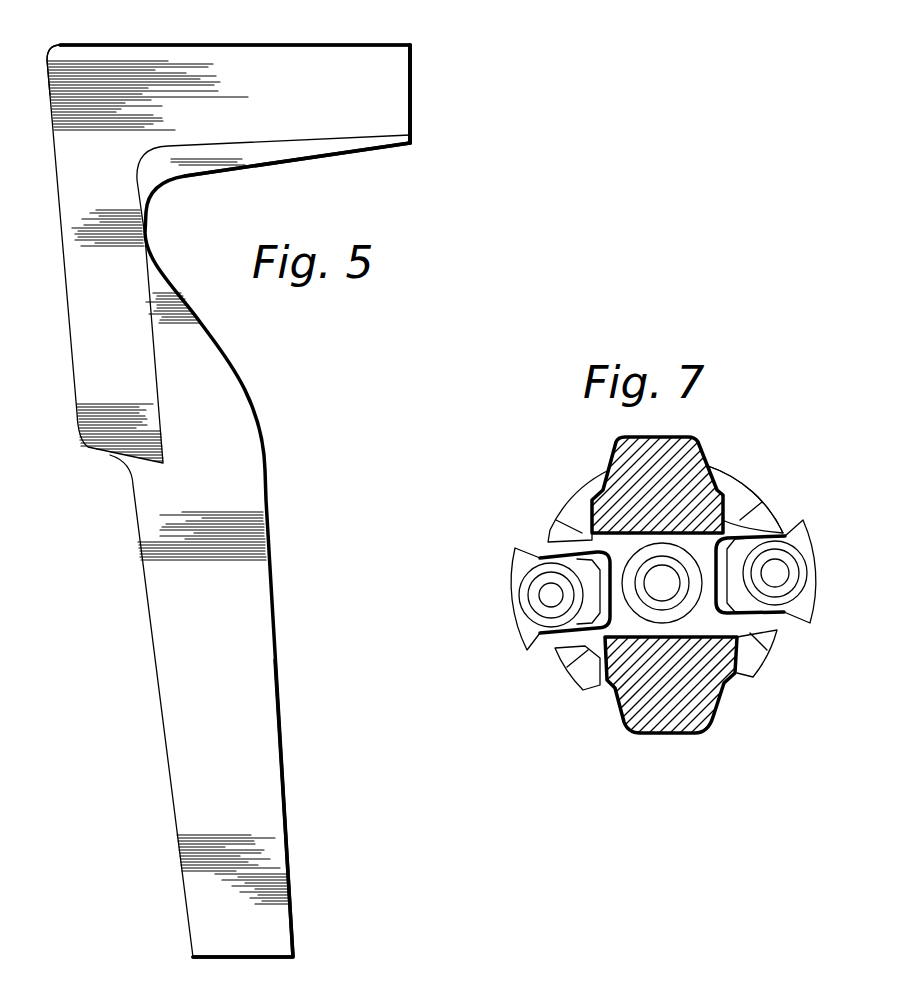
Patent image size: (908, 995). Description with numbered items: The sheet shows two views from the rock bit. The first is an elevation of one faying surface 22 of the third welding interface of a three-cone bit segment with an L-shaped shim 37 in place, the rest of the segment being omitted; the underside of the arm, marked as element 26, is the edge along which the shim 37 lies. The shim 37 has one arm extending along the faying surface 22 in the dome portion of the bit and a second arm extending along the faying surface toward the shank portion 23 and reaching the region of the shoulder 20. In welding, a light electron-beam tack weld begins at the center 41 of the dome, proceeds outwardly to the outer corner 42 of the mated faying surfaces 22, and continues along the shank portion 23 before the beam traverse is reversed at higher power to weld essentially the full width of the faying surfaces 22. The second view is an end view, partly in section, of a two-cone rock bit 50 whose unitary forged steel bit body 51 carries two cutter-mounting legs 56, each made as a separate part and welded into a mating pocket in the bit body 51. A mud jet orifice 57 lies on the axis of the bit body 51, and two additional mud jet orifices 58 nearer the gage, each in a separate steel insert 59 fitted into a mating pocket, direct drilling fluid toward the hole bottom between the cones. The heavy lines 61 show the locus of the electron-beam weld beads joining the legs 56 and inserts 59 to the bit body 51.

In FIG. 5, the shoulder 20 is at (88, 448).
In FIG. 5, the faying surface 22 is at (268, 656).
In FIG. 5, the shank portion 23 is at (288, 806).
In FIG. 5, the underside of arm 26 is at (350, 145).
In FIG. 5, the L-shaped shim 37 is at (343, 64).
In FIG. 5, the center 41 is at (412, 95).
In FIG. 5, the outer corner 42 is at (45, 55).
In FIG. 7, the two-cone rock bit 50 is at (585, 718).
In FIG. 7, the bit body 51 is at (760, 488).
In FIG. 7, the leg 56 is at (702, 440).
In FIG. 7, the mud jet orifice 57 is at (672, 590).
In FIG. 7, the mud jet orifice 58 is at (551, 596).
In FIG. 7, the steel insert 59 is at (515, 590).
In FIG. 7, the heavy lines 61 is at (542, 557).